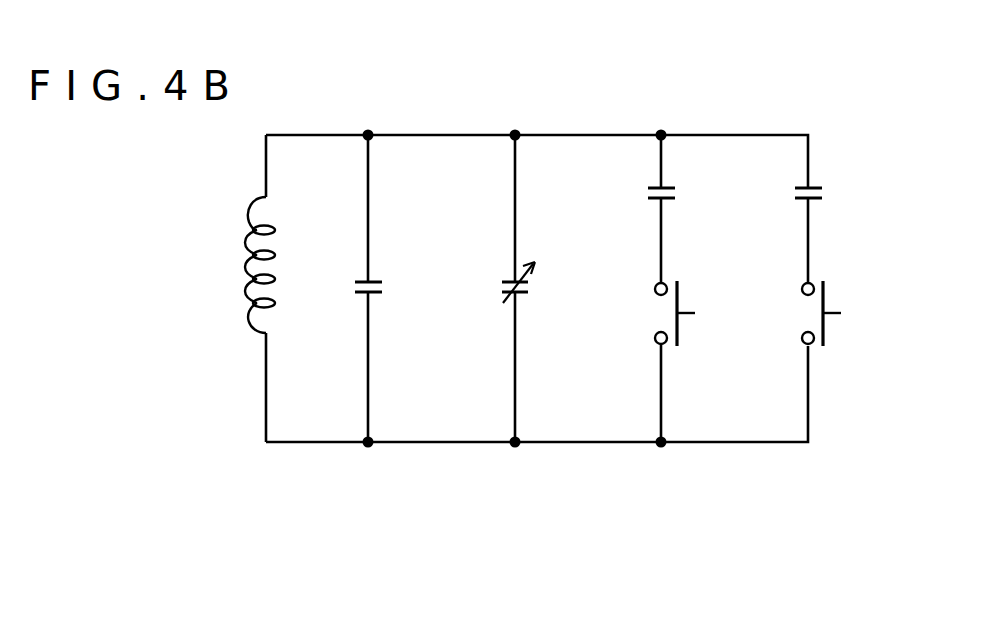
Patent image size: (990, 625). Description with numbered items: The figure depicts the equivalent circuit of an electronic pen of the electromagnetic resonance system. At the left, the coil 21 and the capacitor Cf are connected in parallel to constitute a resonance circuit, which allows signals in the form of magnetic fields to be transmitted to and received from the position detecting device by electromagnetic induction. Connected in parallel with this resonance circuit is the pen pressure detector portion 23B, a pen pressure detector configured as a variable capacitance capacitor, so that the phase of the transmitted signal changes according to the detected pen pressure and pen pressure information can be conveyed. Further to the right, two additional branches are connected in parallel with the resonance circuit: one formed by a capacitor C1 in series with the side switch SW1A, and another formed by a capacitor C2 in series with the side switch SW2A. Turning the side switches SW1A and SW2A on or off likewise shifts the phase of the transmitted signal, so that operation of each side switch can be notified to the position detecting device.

The coil 21 is at (245, 266).
The capacitor Cf is at (353, 283).
The pen pressure detector portion 23B is at (500, 283).
The capacitor C1 is at (645, 190).
The capacitor C2 is at (793, 190).
The side switch SW1A is at (680, 337).
The side switch SW2A is at (826, 337).